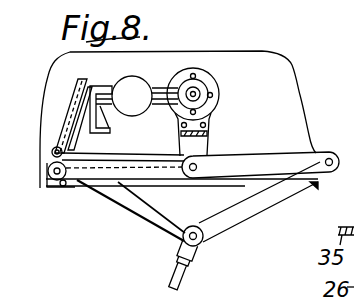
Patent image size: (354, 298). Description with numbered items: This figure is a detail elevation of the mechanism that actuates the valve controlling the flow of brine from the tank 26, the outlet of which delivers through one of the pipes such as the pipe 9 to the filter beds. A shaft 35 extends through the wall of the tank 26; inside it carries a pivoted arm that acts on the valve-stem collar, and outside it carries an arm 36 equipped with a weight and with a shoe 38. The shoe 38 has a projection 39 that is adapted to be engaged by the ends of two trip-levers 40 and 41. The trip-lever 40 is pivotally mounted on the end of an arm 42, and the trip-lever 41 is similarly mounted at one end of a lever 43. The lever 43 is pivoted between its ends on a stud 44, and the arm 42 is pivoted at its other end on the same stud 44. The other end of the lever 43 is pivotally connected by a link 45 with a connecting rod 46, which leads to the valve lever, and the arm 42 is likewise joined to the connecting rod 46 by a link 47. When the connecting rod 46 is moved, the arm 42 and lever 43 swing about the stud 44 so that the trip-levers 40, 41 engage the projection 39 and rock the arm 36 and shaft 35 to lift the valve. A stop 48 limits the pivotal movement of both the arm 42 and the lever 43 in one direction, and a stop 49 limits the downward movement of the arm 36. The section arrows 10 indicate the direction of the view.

The pipe 9 is at (29, 70).
The direction of view arrow 10 is at (60, 49).
The tank 26 is at (298, 128).
The shaft 35 is at (194, 94).
The arm 36 is at (141, 74).
The shoe 38 is at (99, 116).
The projection 39 is at (106, 77).
The trip-lever 40 is at (78, 82).
The trip-lever 41 is at (80, 131).
The arm 42 is at (118, 182).
The lever 43 is at (82, 189).
The stud 44 is at (193, 179).
The link 45 is at (253, 207).
The connecting rod 46 is at (178, 276).
The link 47 is at (147, 215).
The stop 48 is at (54, 185).
The stop 49 is at (170, 116).